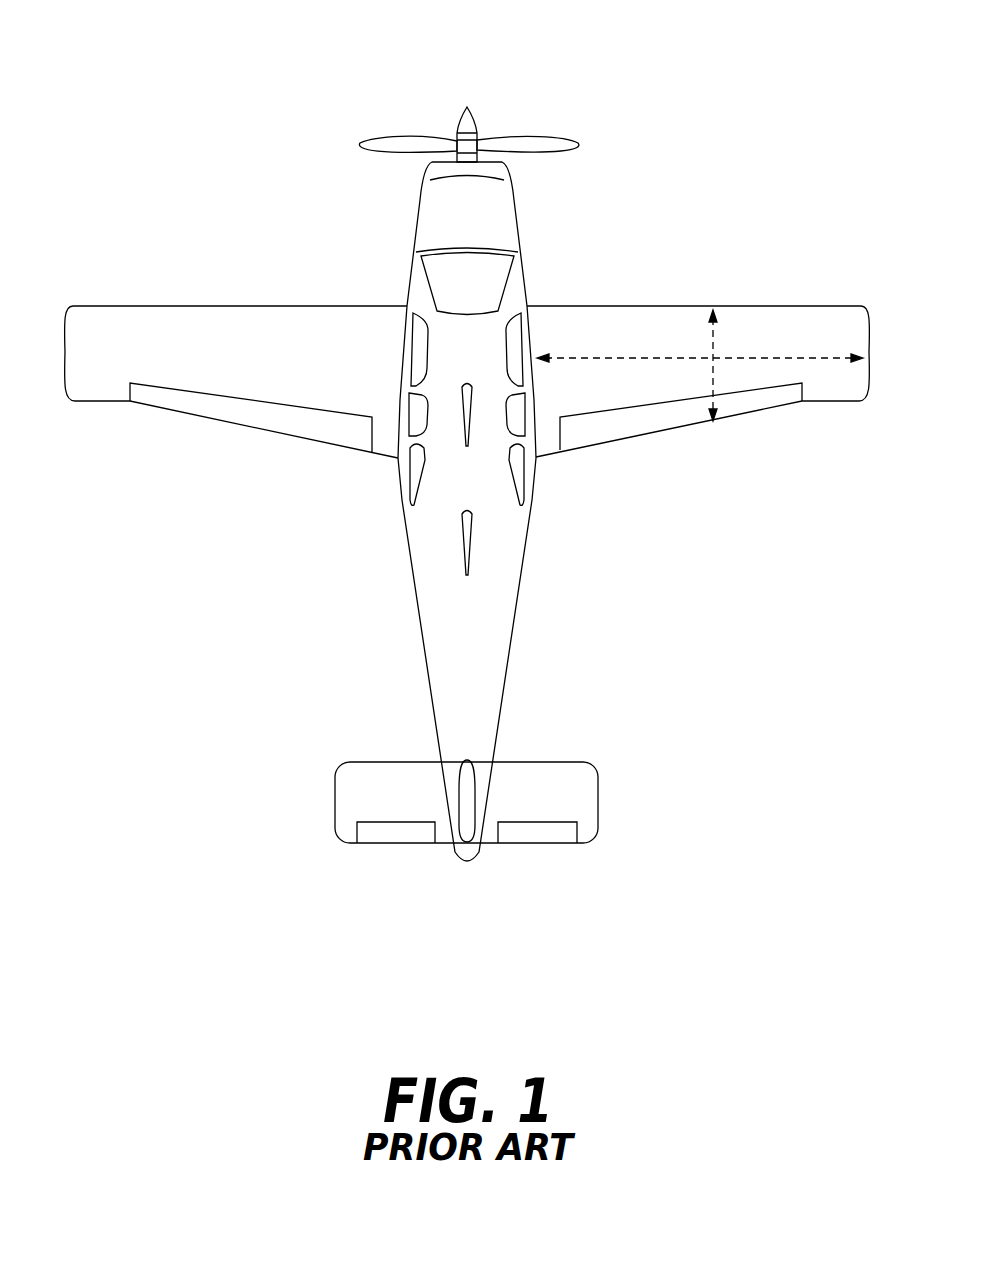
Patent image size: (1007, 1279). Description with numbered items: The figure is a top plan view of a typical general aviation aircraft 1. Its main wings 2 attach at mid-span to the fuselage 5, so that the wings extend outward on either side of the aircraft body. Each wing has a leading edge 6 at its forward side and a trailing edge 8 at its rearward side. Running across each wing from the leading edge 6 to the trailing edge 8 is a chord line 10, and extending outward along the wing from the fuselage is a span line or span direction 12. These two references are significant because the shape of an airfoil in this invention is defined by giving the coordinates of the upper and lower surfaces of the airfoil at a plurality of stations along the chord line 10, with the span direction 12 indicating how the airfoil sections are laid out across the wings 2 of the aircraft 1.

The general aviation aircraft 1 is at (720, 98).
The main wings 2 is at (232, 328).
The fuselage 5 is at (518, 590).
The leading edge 6 is at (122, 306).
The trailing edge 8 is at (112, 407).
The chord line 10 is at (717, 347).
The span line 12 is at (797, 355).